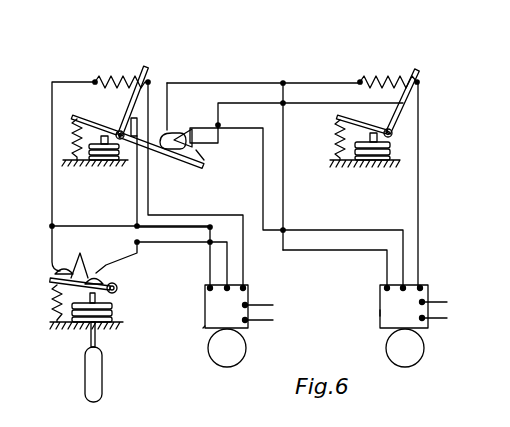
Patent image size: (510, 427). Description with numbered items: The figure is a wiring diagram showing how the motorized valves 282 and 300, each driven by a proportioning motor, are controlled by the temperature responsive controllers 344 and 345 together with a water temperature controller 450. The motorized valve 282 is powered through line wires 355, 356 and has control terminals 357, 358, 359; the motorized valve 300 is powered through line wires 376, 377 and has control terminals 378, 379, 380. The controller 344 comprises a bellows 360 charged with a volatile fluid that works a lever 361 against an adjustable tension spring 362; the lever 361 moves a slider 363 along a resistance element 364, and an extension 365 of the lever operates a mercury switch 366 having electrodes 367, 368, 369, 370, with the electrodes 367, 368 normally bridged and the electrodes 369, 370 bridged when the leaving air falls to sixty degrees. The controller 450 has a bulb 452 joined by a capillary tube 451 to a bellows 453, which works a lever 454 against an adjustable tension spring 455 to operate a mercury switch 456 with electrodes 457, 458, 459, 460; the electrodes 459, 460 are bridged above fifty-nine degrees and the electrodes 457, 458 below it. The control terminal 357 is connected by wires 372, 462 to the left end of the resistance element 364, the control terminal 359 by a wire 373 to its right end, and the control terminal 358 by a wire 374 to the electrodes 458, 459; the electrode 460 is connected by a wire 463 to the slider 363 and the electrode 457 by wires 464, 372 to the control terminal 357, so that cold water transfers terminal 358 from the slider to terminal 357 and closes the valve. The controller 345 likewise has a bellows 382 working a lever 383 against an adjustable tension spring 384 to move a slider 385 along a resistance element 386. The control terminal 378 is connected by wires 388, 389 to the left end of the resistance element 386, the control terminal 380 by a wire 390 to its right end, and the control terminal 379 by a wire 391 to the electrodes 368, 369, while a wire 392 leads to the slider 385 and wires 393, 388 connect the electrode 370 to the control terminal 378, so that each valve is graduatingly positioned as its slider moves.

The temperature responsive controller 344 is at (79, 52).
The temperature responsive controller 345 is at (409, 53).
The resistance element 364 is at (122, 74).
The slider 363 is at (131, 95).
The lever 361 is at (102, 120).
The adjustable tension spring 362 is at (66, 162).
The bellows 360 is at (102, 164).
The wire 462 is at (52, 193).
The wire 463 is at (136, 214).
The wire 464 is at (51, 228).
The wire 393 is at (229, 84).
The electrode 370 is at (168, 118).
The electrode 369 is at (188, 130).
The electrode 368 is at (204, 135).
The electrode 367 is at (209, 146).
The mercury switch 366 is at (208, 160).
The extension 365 is at (176, 162).
The wire 392 is at (242, 105).
The wire 373 is at (197, 215).
The wire 372 is at (209, 230).
The wire 374 is at (184, 243).
The control terminal 357 is at (205, 290).
The control terminal 358 is at (226, 326).
The control terminal 359 is at (250, 286).
The line wire 355 is at (275, 305).
The line wire 356 is at (275, 321).
The motorized valve 282 is at (205, 326).
The resistance element 386 is at (388, 66).
The slider 385 is at (402, 94).
The wire 389 is at (305, 101).
The lever 383 is at (350, 121).
The adjustable tension spring 384 is at (337, 146).
The bellows 382 is at (362, 170).
The wire 390 is at (418, 211).
The wire 391 is at (322, 230).
The wire 388 is at (345, 248).
The control terminal 378 is at (386, 283).
The control terminal 379 is at (404, 326).
The control terminal 380 is at (425, 283).
The line wire 376 is at (442, 302).
The line wire 377 is at (447, 317).
The motorized valve 300 is at (380, 314).
The temperature responsive controller 450 is at (42, 327).
The capillary tube 451 is at (96, 340).
The bulb 452 is at (103, 378).
The bellows 453 is at (113, 312).
The lever 454 is at (50, 283).
The adjustable tension spring 455 is at (53, 307).
The mercury switch 456 is at (55, 275).
The electrode 457 is at (58, 265).
The electrode 458 is at (78, 257).
The electrode 459 is at (94, 270).
The electrode 460 is at (118, 265).